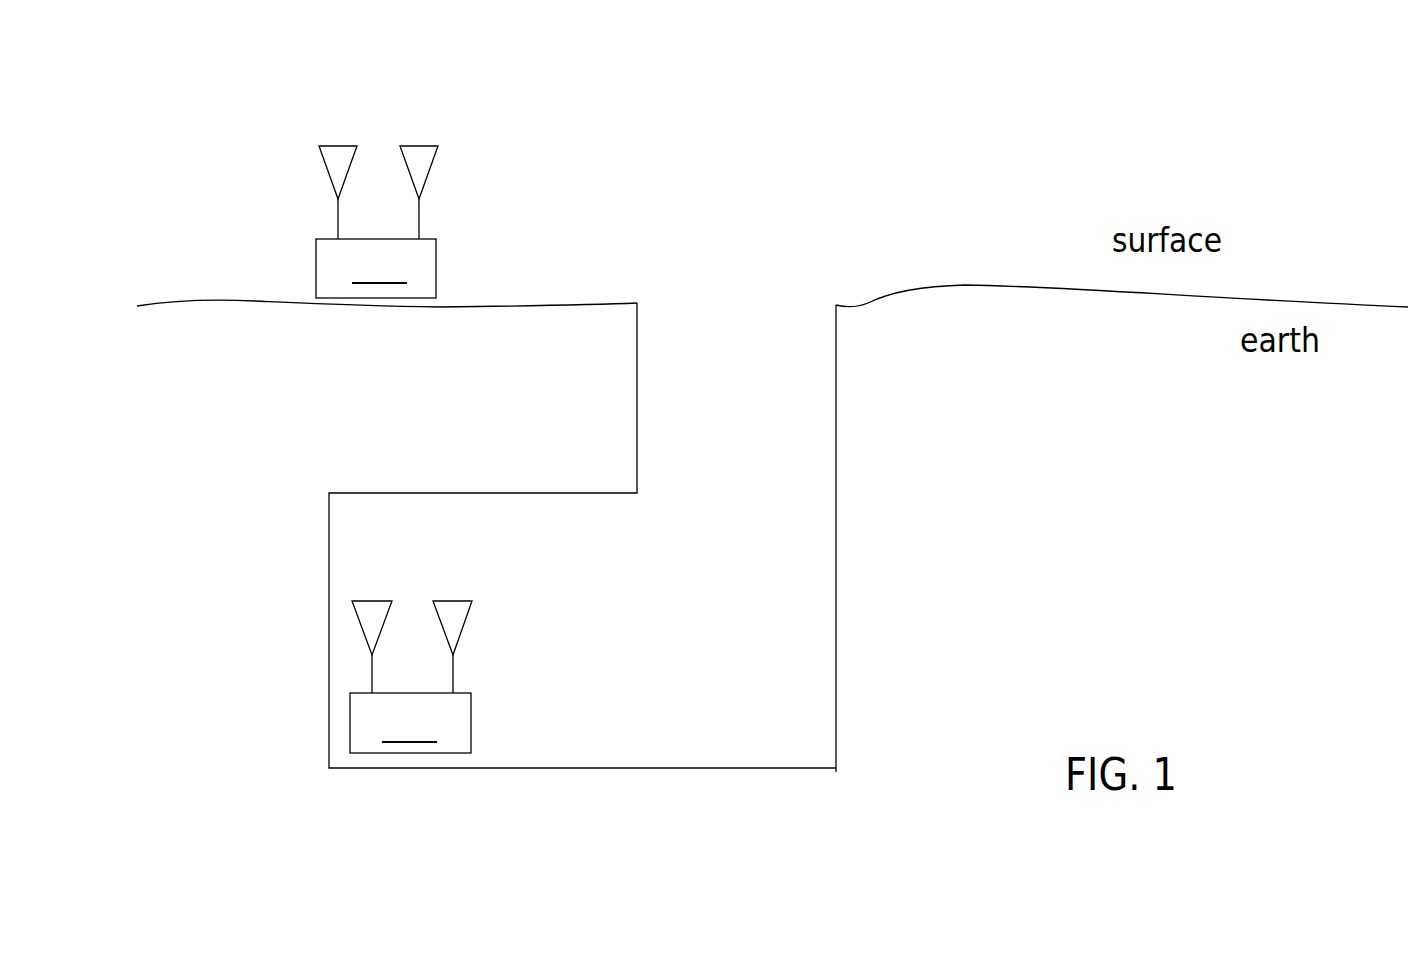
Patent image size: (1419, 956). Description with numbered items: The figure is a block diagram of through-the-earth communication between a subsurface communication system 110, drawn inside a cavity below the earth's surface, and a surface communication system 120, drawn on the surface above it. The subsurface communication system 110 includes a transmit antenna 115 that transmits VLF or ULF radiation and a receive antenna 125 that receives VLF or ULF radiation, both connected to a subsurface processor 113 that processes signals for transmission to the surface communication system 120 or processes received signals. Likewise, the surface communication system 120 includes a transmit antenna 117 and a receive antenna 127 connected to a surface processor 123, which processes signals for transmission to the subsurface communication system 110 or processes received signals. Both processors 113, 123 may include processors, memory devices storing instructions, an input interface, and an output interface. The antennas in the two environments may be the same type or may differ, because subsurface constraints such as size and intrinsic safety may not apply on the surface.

The subsurface communication system 110 is at (468, 583).
The subsurface processor 113 is at (410, 723).
The transmit antenna 115 is at (355, 575).
The receive antenna 125 is at (485, 587).
The surface communication system 120 is at (399, 175).
The surface processor 123 is at (376, 268).
The transmit antenna 117 is at (300, 137).
The receive antenna 127 is at (420, 137).